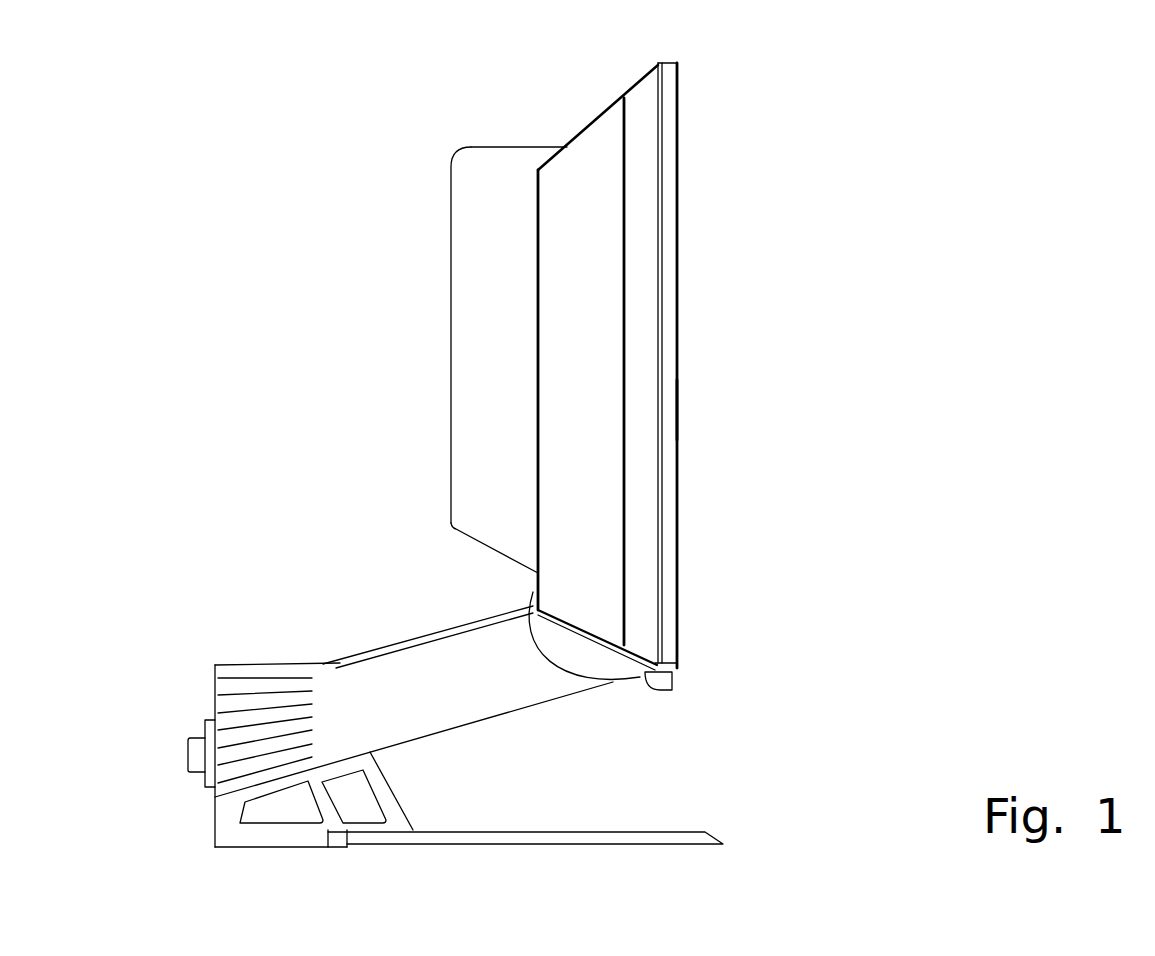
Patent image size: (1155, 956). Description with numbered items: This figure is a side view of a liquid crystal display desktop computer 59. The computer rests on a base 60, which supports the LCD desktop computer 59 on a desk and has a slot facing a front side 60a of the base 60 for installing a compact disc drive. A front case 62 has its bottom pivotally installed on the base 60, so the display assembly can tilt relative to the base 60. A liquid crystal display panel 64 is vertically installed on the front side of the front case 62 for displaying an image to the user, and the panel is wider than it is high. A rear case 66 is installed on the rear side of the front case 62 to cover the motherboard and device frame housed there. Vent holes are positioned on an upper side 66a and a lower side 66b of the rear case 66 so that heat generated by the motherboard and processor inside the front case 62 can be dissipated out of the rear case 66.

The LCD desktop computer 59 is at (933, 177).
The base 60 is at (352, 680).
The front side of the base 60a is at (672, 412).
The front case 62 is at (647, 513).
The liquid crystal display panel 64 is at (677, 250).
The rear case 66 is at (473, 312).
The upper side of the rear case 66a is at (503, 167).
The lower side of the rear case 66b is at (492, 546).